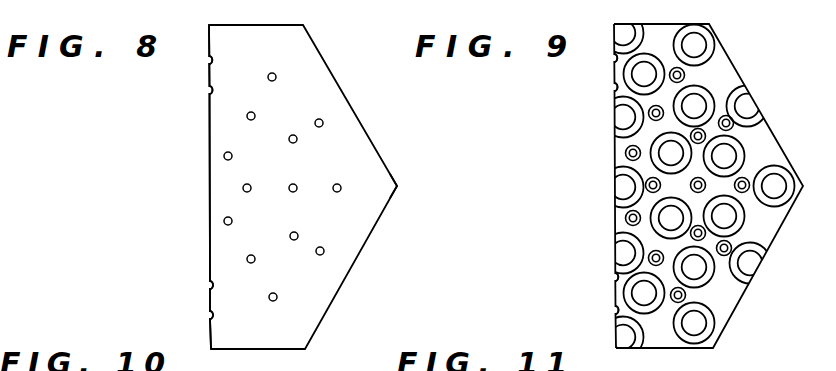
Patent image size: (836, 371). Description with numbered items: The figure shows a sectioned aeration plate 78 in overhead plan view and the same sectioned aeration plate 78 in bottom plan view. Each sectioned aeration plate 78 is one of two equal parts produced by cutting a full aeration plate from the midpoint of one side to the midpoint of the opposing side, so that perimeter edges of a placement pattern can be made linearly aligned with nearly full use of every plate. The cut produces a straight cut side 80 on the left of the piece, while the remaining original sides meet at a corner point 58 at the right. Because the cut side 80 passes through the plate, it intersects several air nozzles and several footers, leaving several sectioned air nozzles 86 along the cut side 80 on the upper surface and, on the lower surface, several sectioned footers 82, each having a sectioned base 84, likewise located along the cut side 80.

In FIG. 8, the sectioned aeration plate 78 is at (342, 19).
In FIG. 9, the sectioned aeration plate 78 is at (746, 18).
In FIG. 8, the cut side 80 is at (209, 187).
In FIG. 9, the cut side 80 is at (614, 222).
In FIG. 8, the corner point 58 is at (397, 186).
In FIG. 9, the sectioned footer 82 is at (620, 137).
In FIG. 9, the sectioned base 84 is at (618, 115).
In FIG. 9, the sectioned air nozzle 86 is at (617, 278).